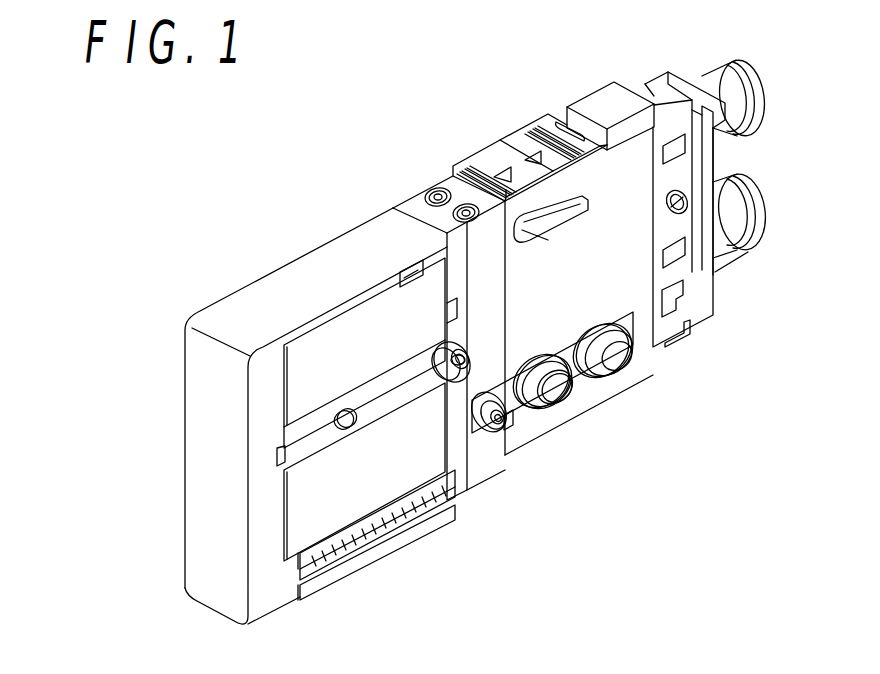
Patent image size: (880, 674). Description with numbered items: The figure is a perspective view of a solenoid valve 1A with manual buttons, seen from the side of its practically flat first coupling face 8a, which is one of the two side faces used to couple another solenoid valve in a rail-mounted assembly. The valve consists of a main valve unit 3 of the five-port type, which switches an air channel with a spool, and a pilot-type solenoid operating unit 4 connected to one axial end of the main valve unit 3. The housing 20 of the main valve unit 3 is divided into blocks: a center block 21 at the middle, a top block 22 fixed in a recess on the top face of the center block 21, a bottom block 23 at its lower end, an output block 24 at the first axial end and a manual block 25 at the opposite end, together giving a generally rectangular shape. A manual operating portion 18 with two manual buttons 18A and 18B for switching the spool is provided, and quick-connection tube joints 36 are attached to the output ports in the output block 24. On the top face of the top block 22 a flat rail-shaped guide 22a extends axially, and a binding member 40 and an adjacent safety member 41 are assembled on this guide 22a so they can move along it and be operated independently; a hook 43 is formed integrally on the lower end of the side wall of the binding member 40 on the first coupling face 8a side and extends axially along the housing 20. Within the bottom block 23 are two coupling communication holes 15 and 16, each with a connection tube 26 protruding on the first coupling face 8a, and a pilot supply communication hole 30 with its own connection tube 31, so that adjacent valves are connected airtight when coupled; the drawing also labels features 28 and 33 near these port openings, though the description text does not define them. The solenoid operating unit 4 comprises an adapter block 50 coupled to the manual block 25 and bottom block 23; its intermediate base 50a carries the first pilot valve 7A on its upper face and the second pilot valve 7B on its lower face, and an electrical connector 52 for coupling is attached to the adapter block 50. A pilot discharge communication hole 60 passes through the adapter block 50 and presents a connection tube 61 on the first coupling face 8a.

The solenoid valve 1A is at (467, 320).
The main valve unit 3 is at (557, 267).
The solenoid operating unit 4 is at (316, 398).
The first pilot valve 7A is at (300, 384).
The second pilot valve 7B is at (308, 518).
The first coupling face 8a is at (668, 284).
The coupling communication hole 15 is at (648, 355).
The coupling communication hole 16 is at (555, 420).
The manual operating portion 18 is at (415, 176).
The manual button 18A is at (424, 193).
The manual button 18B is at (452, 218).
The housing 20 is at (698, 347).
The center block 21 is at (640, 203).
The top block 22 is at (588, 100).
The guide 22a is at (560, 128).
The bottom block 23 is at (558, 383).
The output block 24 is at (615, 88).
The manual block 25 is at (451, 184).
The connection tube 26 is at (632, 368).
The port flange 28 is at (600, 388).
The pilot supply communication hole 30 is at (510, 423).
The connection tube 31 is at (490, 433).
The fitting tab 33 is at (532, 422).
The tube joint 36 is at (700, 77).
The binding member 40 is at (509, 147).
The safety member 41 is at (484, 162).
The hook 43 is at (568, 227).
The adapter block 50 is at (460, 498).
The intermediate base 50a is at (278, 461).
The electrical connector 52 is at (360, 535).
The pilot discharge communication hole 60 is at (468, 367).
The connection tube 61 is at (470, 334).